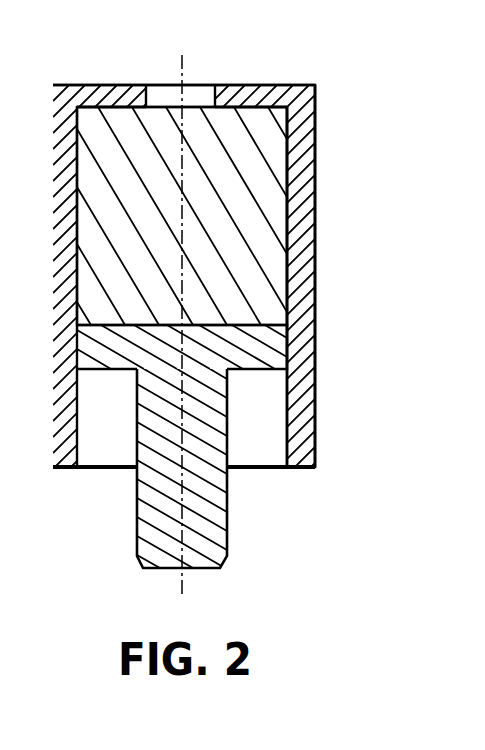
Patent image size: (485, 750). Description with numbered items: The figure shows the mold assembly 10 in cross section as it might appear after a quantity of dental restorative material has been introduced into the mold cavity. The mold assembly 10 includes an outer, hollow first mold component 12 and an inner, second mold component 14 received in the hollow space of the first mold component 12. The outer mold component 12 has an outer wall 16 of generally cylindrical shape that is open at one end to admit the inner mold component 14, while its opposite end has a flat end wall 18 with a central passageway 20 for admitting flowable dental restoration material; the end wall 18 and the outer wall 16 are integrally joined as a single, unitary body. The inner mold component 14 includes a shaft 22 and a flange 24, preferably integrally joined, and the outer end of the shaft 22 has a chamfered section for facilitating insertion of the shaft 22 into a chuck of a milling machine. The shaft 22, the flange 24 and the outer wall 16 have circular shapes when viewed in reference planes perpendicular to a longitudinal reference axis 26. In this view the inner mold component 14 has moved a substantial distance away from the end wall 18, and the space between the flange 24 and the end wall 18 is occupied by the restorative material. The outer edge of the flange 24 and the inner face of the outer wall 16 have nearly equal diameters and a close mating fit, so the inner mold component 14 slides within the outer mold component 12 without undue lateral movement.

The mold assembly 10 is at (300, 55).
The first mold component 12 is at (315, 118).
The second mold component 14 is at (230, 520).
The outer wall 16 is at (313, 223).
The end wall 18 is at (108, 87).
The central passageway 20 is at (213, 100).
The shaft 22 is at (277, 150).
The flange 24 is at (92, 352).
The longitudinal reference axis 26 is at (181, 578).